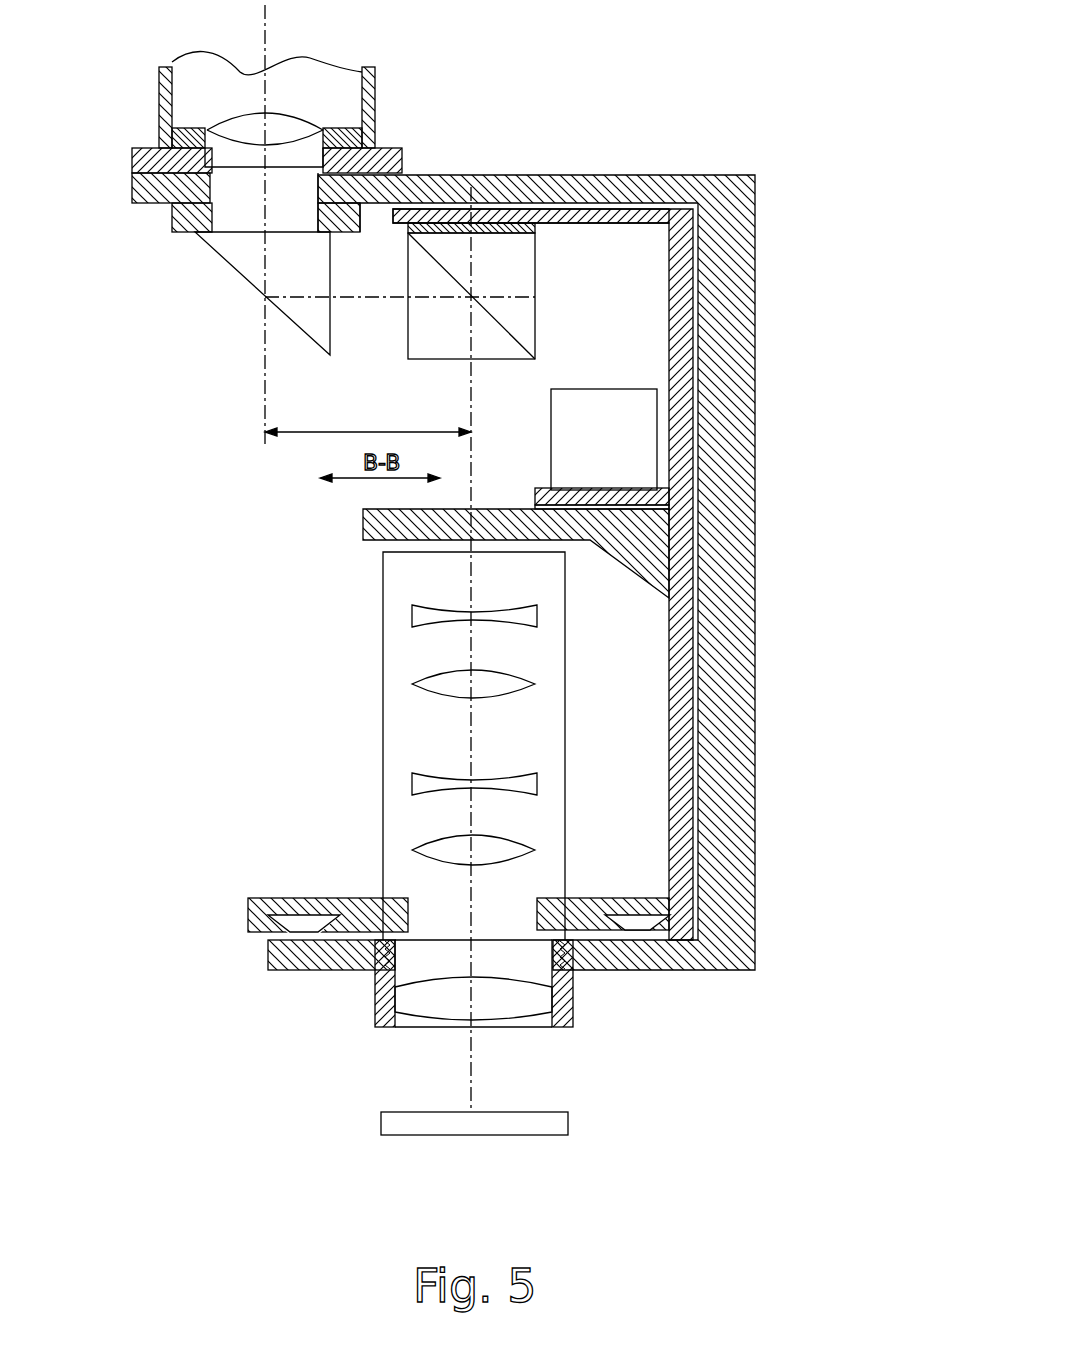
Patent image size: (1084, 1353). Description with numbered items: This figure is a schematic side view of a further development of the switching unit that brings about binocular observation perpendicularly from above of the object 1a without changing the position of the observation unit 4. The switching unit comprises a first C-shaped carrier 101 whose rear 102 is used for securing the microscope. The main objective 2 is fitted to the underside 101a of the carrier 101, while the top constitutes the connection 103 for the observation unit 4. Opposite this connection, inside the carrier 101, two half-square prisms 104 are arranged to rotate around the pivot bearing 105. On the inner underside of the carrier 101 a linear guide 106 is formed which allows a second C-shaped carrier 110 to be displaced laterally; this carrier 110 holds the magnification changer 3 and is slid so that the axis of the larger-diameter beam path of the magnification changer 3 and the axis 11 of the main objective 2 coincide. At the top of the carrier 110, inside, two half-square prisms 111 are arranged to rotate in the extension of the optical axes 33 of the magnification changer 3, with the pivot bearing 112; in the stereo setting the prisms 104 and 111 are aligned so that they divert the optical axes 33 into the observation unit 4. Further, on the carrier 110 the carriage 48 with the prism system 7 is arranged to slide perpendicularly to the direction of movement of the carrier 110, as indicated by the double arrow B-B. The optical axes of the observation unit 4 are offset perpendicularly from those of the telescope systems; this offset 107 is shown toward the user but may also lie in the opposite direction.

The object 1a is at (402, 1118).
The main objective 2 is at (513, 1000).
The magnification changer 3 is at (383, 729).
The observation unit 4 is at (287, 123).
The prism system 7 is at (593, 425).
The axis of the main objective 11 is at (471, 1069).
The optical axes of the magnification changer 33 is at (472, 650).
The carriage 48 is at (658, 487).
The first C-shaped carrier 101 is at (720, 175).
The underside of the carrier 101a is at (713, 972).
The rear of the carrier 102 is at (755, 366).
The connection for the observation unit 103 is at (400, 148).
The half-square prism 104 is at (315, 297).
The pivot bearing 105 is at (173, 233).
The linear guide 106 is at (297, 928).
The offset 107 is at (308, 432).
The second C-shaped carrier 110 is at (670, 708).
The half-square prism 111 is at (432, 320).
The pivot bearing 112 is at (545, 190).